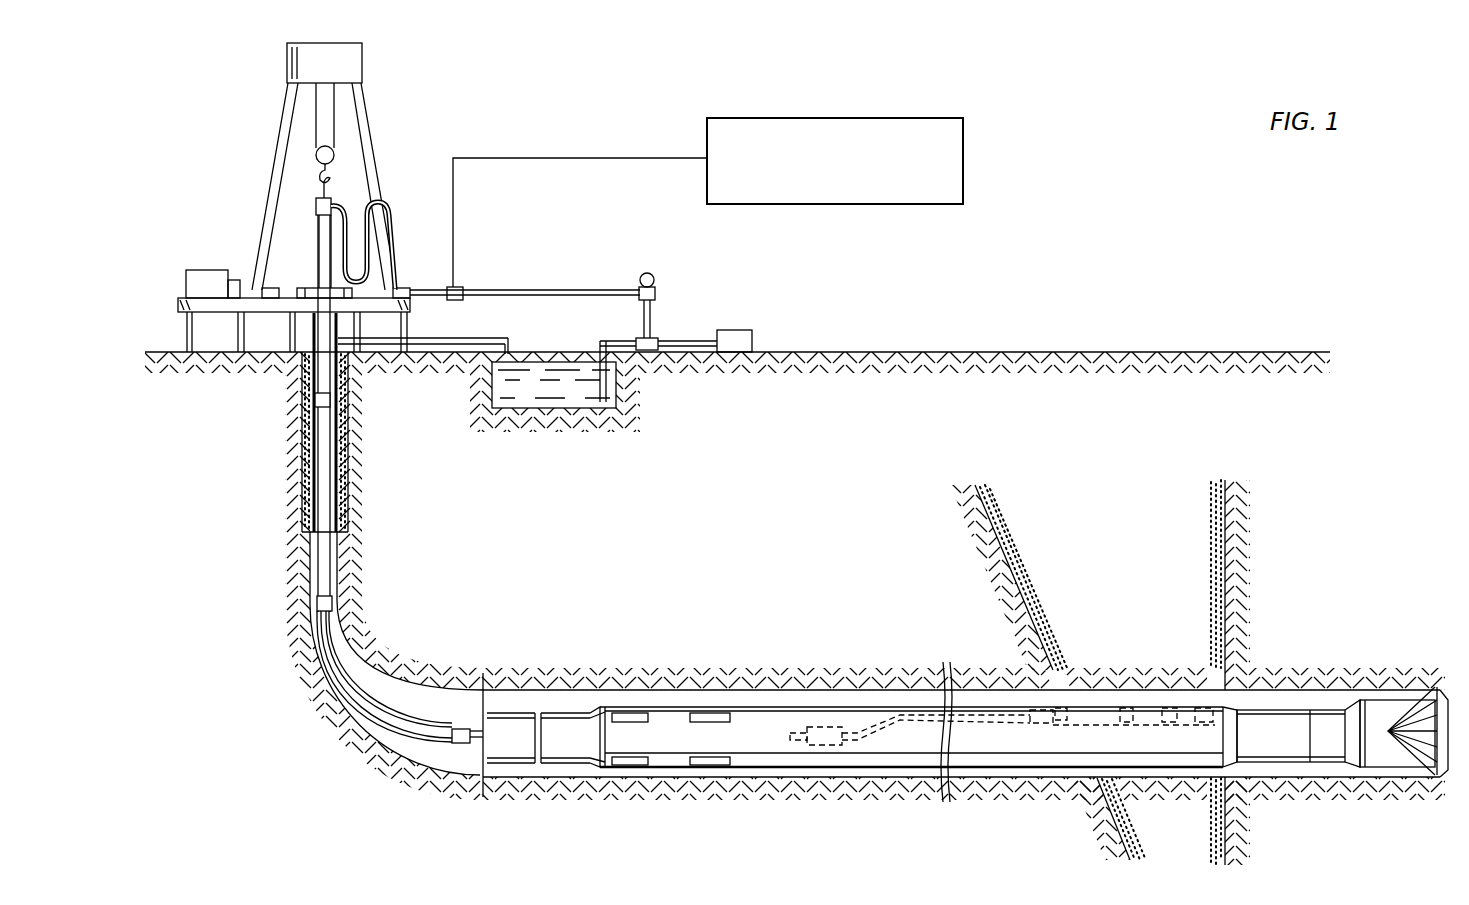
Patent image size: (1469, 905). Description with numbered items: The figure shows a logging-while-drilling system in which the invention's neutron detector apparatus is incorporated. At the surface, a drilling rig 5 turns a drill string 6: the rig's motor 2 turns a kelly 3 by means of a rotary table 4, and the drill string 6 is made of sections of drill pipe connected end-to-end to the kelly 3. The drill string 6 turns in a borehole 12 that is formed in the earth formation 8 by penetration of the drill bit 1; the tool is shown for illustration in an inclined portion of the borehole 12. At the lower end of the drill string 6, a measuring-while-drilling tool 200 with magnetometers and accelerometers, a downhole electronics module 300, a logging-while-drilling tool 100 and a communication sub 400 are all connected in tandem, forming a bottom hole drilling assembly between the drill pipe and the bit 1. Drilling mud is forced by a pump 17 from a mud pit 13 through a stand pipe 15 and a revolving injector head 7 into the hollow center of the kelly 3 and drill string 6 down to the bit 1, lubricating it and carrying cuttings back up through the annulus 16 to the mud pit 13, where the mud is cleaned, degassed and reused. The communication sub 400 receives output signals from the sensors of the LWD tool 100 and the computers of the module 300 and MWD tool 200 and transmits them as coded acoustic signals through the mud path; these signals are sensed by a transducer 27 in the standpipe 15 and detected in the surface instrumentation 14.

The drill bit 1 is at (1420, 772).
The motor 2 is at (201, 270).
The kelly 3 is at (320, 247).
The rotary table 4 is at (352, 280).
The drilling rig 5 is at (282, 100).
The drill string 6 is at (300, 450).
The revolving injector head 7 is at (318, 205).
The earth formation 8 is at (1115, 543).
The borehole 12 is at (347, 643).
The mud pit 13 is at (560, 392).
The surface instrumentation 14 is at (897, 205).
The stand pipe 15 is at (572, 290).
The annulus 16 is at (332, 571).
The pump 17 is at (755, 340).
The transducer 27 is at (462, 290).
The logging-while-drilling tool 100 is at (1222, 572).
The measuring-while-drilling tool 200 is at (510, 758).
The downhole electronics module 300 is at (568, 750).
The communication sub 400 is at (1283, 705).